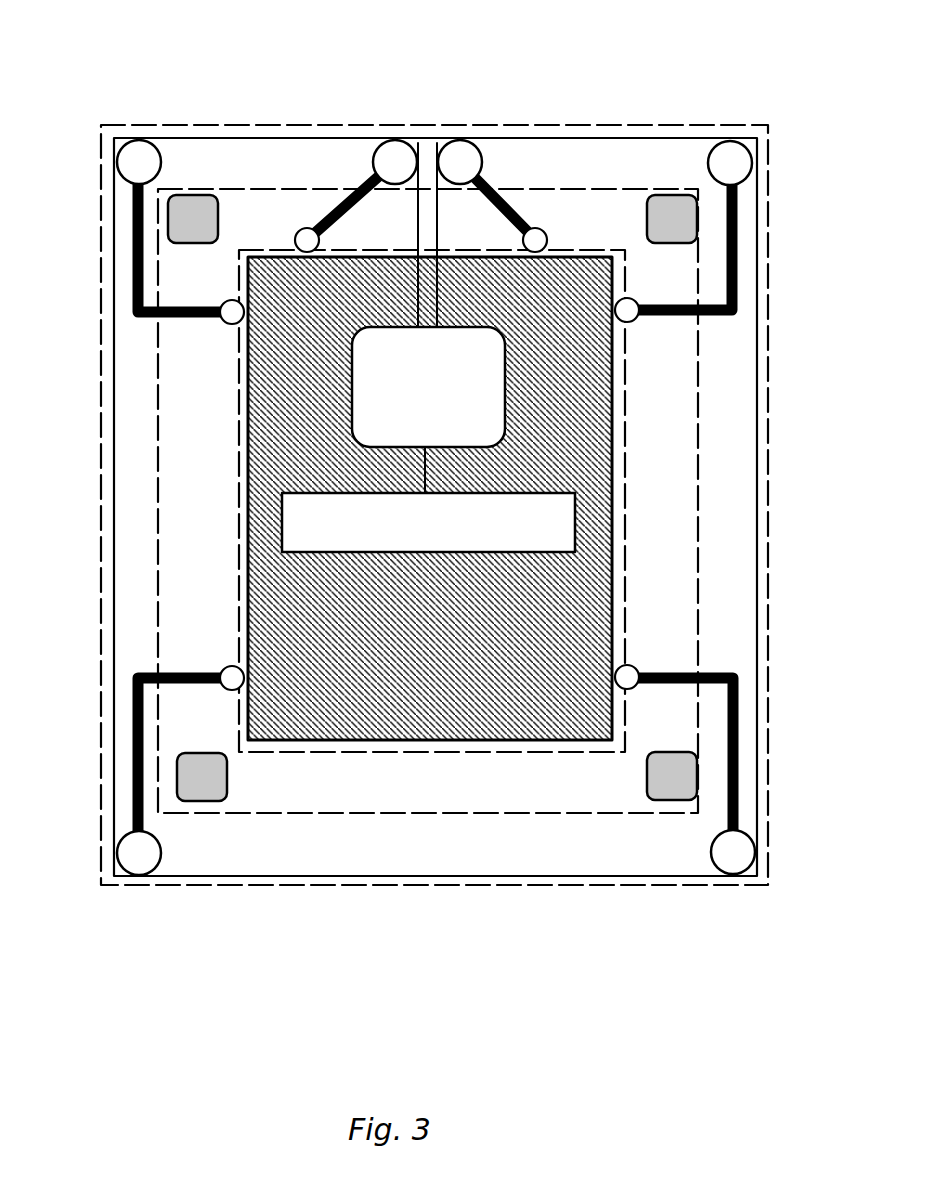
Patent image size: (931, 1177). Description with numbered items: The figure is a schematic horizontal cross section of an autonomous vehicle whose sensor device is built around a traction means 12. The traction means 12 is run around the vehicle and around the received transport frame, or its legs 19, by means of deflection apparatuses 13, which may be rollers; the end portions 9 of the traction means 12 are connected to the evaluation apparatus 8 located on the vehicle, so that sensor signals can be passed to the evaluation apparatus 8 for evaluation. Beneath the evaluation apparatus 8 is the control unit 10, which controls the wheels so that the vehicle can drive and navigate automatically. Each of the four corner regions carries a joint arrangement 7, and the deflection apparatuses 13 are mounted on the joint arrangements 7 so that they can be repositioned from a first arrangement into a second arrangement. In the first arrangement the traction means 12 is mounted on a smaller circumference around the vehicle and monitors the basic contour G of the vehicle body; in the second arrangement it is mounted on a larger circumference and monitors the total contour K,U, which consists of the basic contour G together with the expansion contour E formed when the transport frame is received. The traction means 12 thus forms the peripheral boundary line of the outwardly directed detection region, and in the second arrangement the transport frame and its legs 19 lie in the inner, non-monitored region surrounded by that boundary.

The joint arrangement 7 is at (320, 204).
The evaluation apparatus 8 is at (428, 387).
The end portions 9 is at (418, 232).
The control unit 10 is at (428, 522).
The traction means 12 is at (118, 533).
The deflection apparatuses 13 is at (132, 158).
The legs 19 is at (212, 220).
The total contour and peripheral boundary line K,U is at (247, 887).
The expansion contour E is at (343, 817).
The basic contour G is at (378, 753).